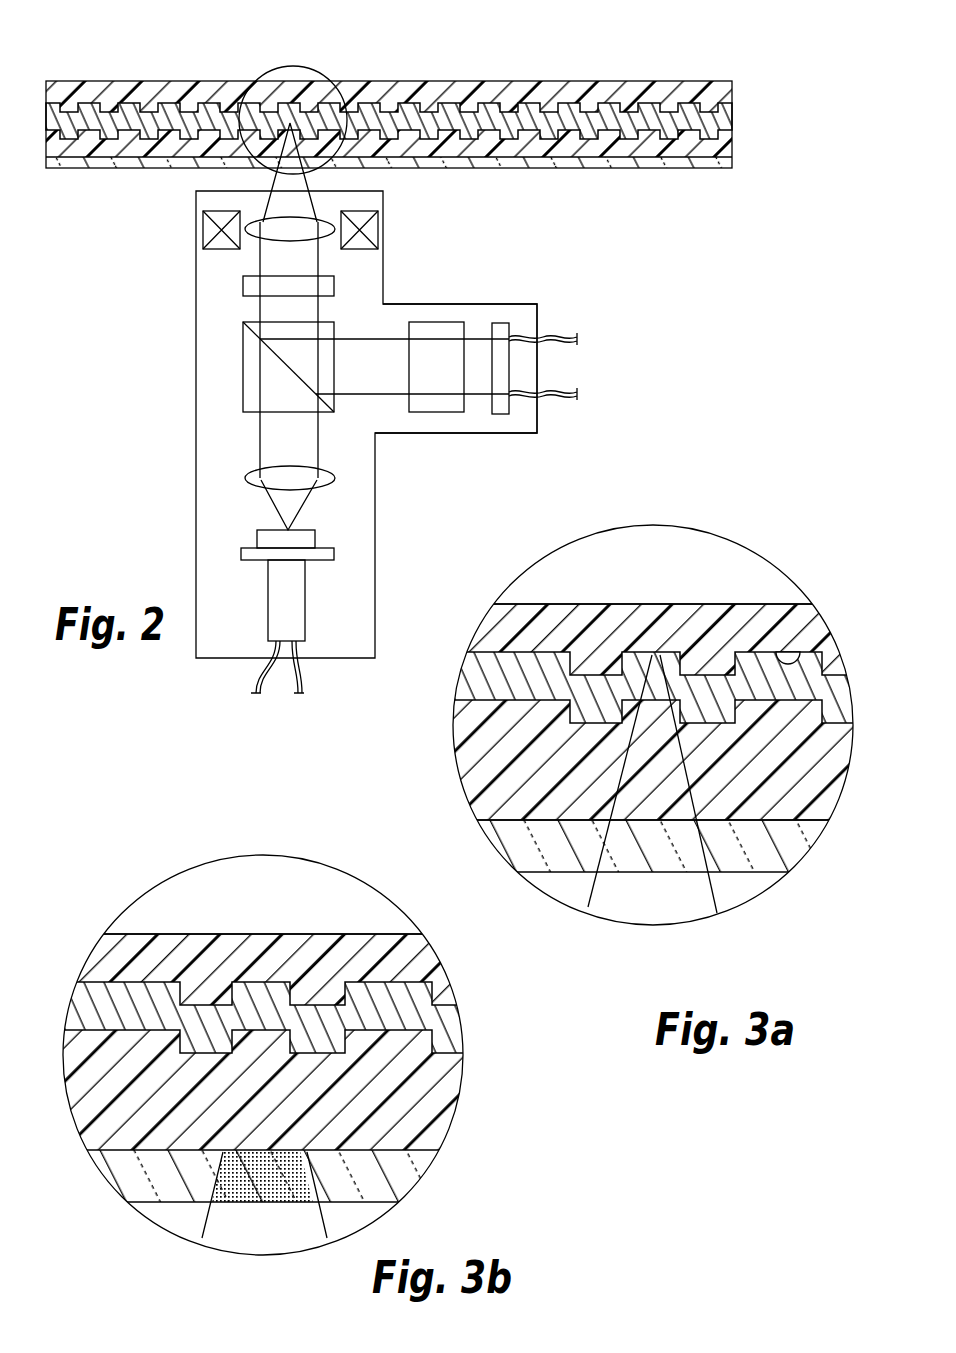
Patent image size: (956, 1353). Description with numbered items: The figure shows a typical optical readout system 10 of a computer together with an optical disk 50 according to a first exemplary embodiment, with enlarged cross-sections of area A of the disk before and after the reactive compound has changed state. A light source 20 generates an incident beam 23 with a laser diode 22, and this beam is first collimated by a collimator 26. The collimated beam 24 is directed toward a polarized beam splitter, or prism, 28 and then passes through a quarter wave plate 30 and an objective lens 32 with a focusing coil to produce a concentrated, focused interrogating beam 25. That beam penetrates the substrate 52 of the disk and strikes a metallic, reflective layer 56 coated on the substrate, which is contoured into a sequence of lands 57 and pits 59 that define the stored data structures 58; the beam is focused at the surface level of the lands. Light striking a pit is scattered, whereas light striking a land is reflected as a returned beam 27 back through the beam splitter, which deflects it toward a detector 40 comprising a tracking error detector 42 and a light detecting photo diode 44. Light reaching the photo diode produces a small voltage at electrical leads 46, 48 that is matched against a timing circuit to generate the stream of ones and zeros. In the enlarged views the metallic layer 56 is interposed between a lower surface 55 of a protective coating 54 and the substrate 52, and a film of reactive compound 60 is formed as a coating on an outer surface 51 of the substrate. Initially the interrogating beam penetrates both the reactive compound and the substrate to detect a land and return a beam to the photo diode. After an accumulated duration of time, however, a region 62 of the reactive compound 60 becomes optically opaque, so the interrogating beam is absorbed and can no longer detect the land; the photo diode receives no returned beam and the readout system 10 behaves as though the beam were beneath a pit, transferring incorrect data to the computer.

In FIG. 2, the optical readout system 10 is at (672, 280).
In FIG. 2, the light source 20 is at (215, 447).
In FIG. 2, the laser diode 22 is at (298, 600).
In FIG. 2, the beam 23 is at (282, 500).
In FIG. 2, the collimated beam 24 is at (318, 440).
In FIG. 2, the focused interrogating beam 25 is at (318, 178).
In FIG. 3A, the focused interrogating beam 25 is at (593, 884).
In FIG. 3B, the focused interrogating beam 25 is at (200, 1222).
In FIG. 2, the collimator 26 is at (325, 480).
In FIG. 2, the returned beam 27 is at (340, 338).
In FIG. 3A, the returned beam 27 is at (715, 895).
In FIG. 2, the polarized beam splitter 28 is at (243, 372).
In FIG. 2, the quarter wave plate 30 is at (245, 287).
In FIG. 2, the objective lens 32 is at (252, 220).
In FIG. 2, the detector 40 is at (472, 300).
In FIG. 2, the tracking error detector 42 is at (446, 406).
In FIG. 2, the light detecting photo diode 44 is at (500, 332).
In FIG. 2, the electrical lead 46 is at (562, 405).
In FIG. 2, the electrical lead 48 is at (565, 347).
In FIG. 2, the optical disk 50 is at (668, 58).
In FIG. 3B, the optical disk 50 is at (93, 903).
In FIG. 3A, the outer surface 51 is at (765, 825).
In FIG. 2, the substrate 52 is at (590, 140).
In FIG. 3A, the substrate 52 is at (475, 758).
In FIG. 3B, the substrate 52 is at (100, 1070).
In FIG. 2, the protective coating 54 is at (389, 96).
In FIG. 3A, the protective coating 54 is at (760, 625).
In FIG. 3B, the protective coating 54 is at (265, 969).
In FIG. 3A, the lower surface 55 is at (803, 670).
In FIG. 2, the metallic layer 56 is at (483, 118).
In FIG. 3A, the metallic layer 56 is at (475, 682).
In FIG. 3B, the metallic layer 56 is at (435, 1020).
In FIG. 2, the land 57 is at (123, 82).
In FIG. 3A, the land 57 is at (650, 688).
In FIG. 3B, the land 57 is at (258, 1018).
In FIG. 2, the data structures 58 is at (515, 110).
In FIG. 3A, the data structures 58 is at (522, 688).
In FIG. 2, the pit 59 is at (445, 118).
In FIG. 2, the reactive compound 60 is at (389, 162).
In FIG. 3A, the reactive compound 60 is at (532, 862).
In FIG. 3B, the reactive compound 60 is at (408, 1165).
In FIG. 3B, the region 62 is at (275, 1200).